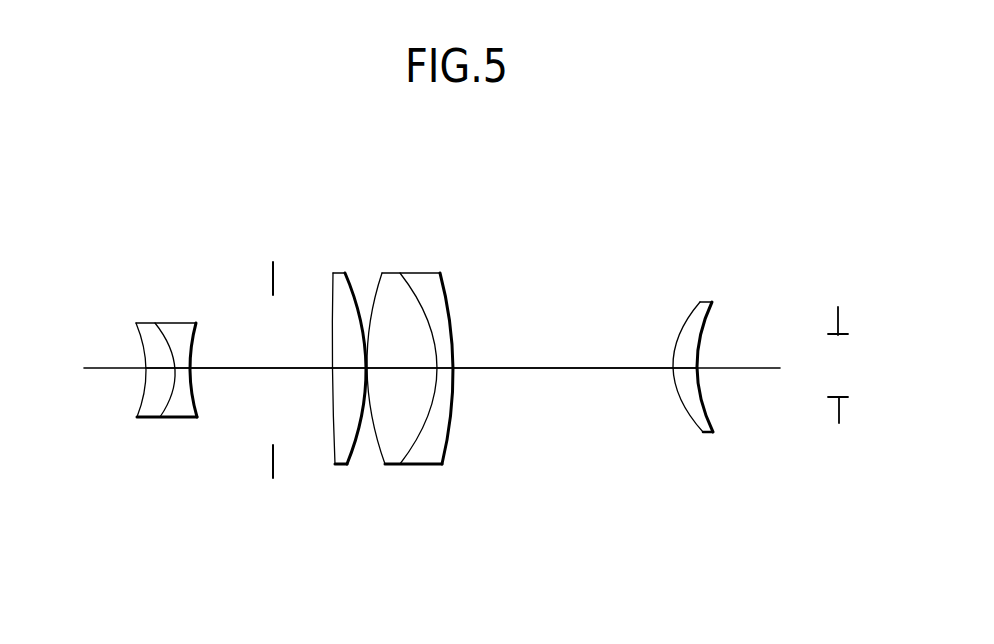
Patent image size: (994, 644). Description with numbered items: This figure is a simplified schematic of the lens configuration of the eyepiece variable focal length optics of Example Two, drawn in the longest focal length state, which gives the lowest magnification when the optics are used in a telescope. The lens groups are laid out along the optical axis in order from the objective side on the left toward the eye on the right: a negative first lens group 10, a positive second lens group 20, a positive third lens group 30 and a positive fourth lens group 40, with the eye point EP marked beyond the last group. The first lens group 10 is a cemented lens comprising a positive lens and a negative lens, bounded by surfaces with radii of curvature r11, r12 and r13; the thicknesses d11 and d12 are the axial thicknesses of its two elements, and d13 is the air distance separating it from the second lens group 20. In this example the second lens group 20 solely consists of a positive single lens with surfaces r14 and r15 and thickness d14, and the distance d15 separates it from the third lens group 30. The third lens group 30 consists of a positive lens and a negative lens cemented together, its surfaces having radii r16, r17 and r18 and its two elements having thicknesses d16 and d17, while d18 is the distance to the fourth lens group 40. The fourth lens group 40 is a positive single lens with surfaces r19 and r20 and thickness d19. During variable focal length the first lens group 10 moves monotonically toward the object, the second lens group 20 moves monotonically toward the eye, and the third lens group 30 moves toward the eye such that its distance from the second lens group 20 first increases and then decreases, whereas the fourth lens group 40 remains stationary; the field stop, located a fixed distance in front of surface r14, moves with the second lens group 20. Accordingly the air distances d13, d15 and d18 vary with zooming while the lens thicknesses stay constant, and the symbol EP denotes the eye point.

The first lens group 10 is at (95, 235).
The second lens group 20 is at (363, 182).
The third lens group 30 is at (378, 182).
The fourth lens group 40 is at (687, 222).
The radius of curvature of surface No. 11 r11 is at (137, 322).
The radius of curvature of surface No. 12 r12 is at (154, 322).
The radius of curvature of surface No. 13 r13 is at (195, 322).
The thickness at surface No. 11 d11 is at (160, 375).
The thickness at surface No. 12 d12 is at (185, 375).
The distance at surface No. 13 d13 is at (262, 369).
The radius of curvature of surface No. 14 r14 is at (334, 273).
The radius of curvature of surface No. 15 r15 is at (346, 273).
The thickness at surface No. 14 d14 is at (350, 372).
The distance at surface No. 15 d15 is at (365, 400).
The radius of curvature of surface No. 16 r16 is at (384, 274).
The radius of curvature of surface No. 17 r17 is at (402, 274).
The radius of curvature of surface No. 18 r18 is at (442, 274).
The thickness at surface No. 16 d16 is at (400, 373).
The thickness at surface No. 17 d17 is at (447, 395).
The distance at surface No. 18 d18 is at (565, 367).
The radius of curvature of surface No. 19 r19 is at (700, 300).
The radius of curvature of surface No. 20 r20 is at (710, 300).
The thickness at surface No. 19 d19 is at (688, 375).
The eye point EP is at (853, 365).